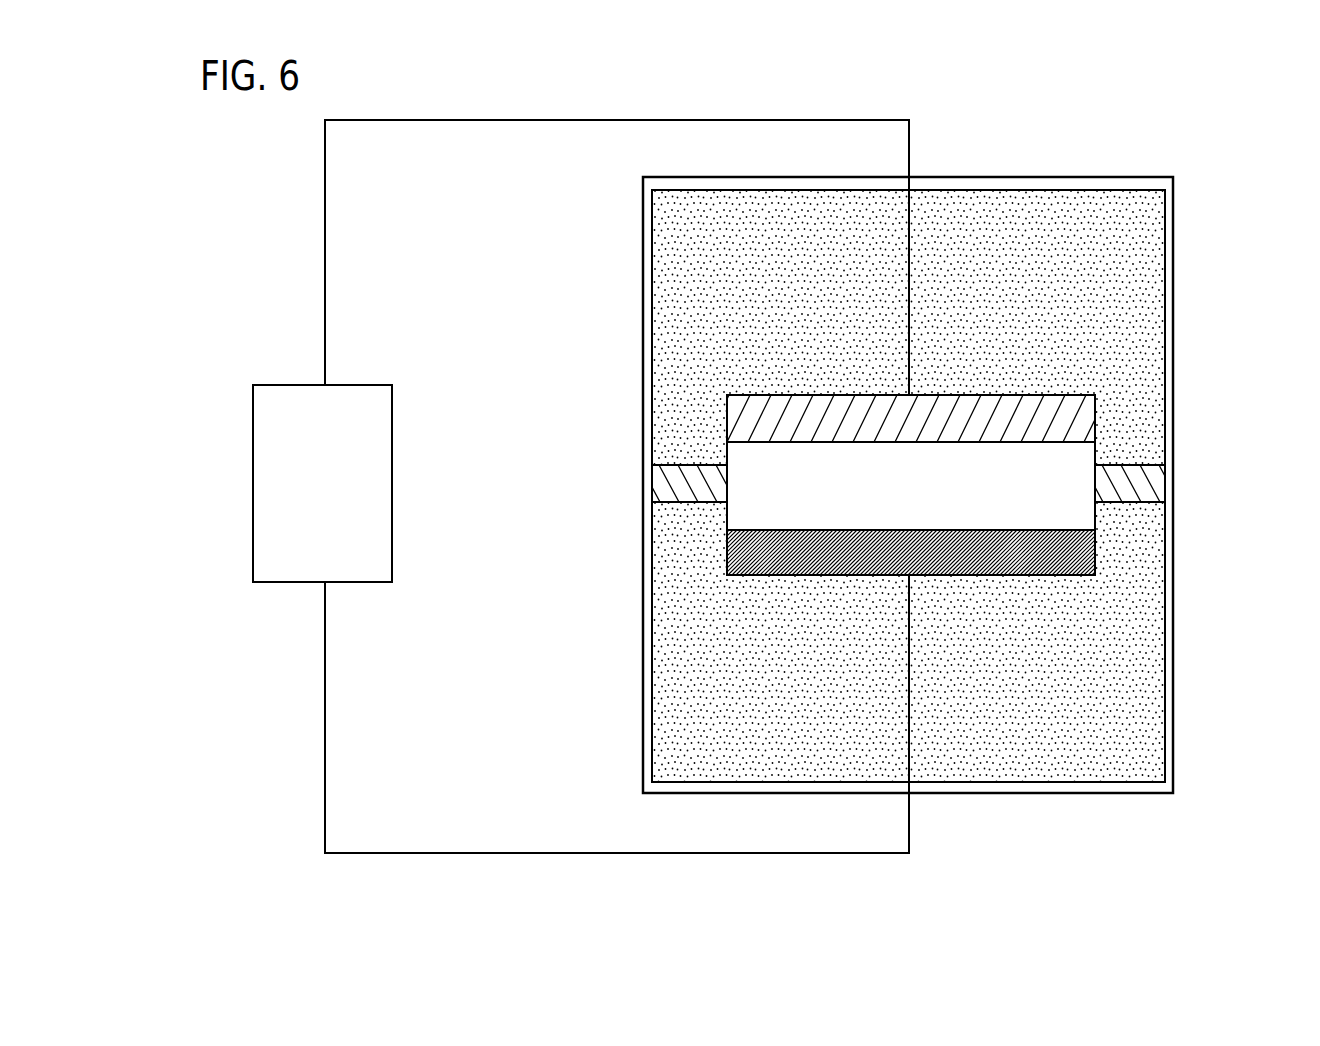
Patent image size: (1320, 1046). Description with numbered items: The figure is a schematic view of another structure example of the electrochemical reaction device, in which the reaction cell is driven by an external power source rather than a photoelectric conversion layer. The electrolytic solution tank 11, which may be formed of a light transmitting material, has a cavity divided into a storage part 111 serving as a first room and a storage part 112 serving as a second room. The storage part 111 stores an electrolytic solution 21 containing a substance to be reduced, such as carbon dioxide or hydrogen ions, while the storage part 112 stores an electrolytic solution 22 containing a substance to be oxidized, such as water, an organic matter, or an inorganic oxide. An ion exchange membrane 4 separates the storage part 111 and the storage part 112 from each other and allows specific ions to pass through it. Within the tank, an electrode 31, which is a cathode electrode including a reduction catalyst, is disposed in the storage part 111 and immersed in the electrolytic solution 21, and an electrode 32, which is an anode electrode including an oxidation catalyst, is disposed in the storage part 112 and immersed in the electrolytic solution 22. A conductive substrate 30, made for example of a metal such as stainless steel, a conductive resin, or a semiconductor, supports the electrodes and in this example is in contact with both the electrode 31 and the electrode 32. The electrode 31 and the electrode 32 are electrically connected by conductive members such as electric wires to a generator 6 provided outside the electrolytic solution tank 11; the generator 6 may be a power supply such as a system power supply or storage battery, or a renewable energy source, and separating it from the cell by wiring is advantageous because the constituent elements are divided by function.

The generator 6 is at (393, 430).
The electrolytic solution tank 11 is at (643, 206).
The storage part (first room) 111 is at (651, 672).
The storage part (second room) 112 is at (653, 427).
The electrolytic solution 21 is at (1147, 668).
The electrolytic solution 22 is at (1152, 237).
The ion exchange membrane 4 is at (660, 477).
The conductive substrate 30 is at (1083, 472).
The electrode 31 is at (1085, 558).
The electrode 32 is at (1088, 418).